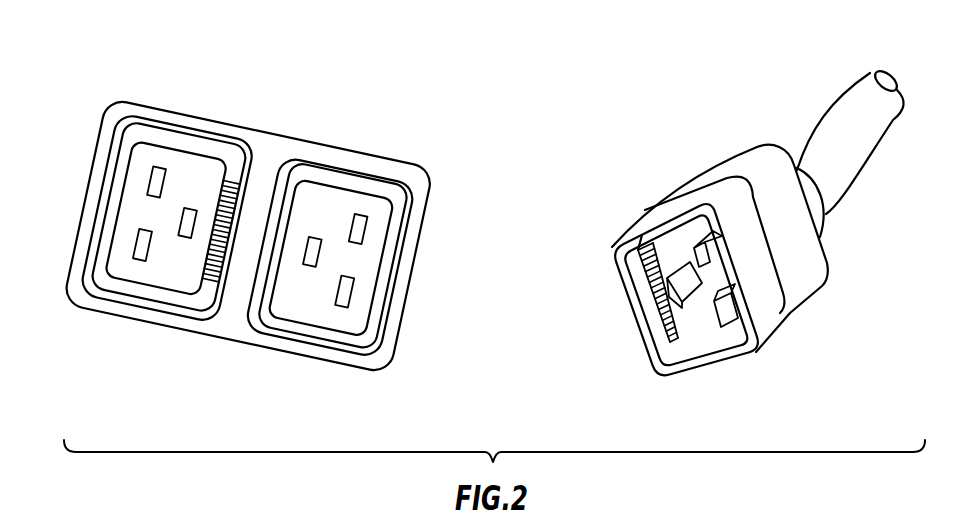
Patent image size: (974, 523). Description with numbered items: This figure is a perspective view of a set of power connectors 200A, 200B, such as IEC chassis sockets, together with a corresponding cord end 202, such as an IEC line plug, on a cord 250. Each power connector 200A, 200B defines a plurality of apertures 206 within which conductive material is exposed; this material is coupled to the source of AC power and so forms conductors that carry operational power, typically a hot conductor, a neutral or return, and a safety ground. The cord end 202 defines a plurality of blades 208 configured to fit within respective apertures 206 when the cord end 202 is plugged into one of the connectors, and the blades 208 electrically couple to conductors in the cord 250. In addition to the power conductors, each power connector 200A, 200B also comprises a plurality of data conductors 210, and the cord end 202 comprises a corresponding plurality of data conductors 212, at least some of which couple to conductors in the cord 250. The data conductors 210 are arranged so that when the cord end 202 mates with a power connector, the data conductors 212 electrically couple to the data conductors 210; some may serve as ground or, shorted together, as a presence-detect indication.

The power connector 200A is at (153, 312).
The power connector 200B is at (317, 347).
The cord end 202 is at (766, 366).
The apertures 206 is at (157, 168).
The blades 208 is at (698, 245).
The data conductors 210 is at (225, 278).
The data conductors 212 is at (676, 348).
The cord 250 is at (853, 188).